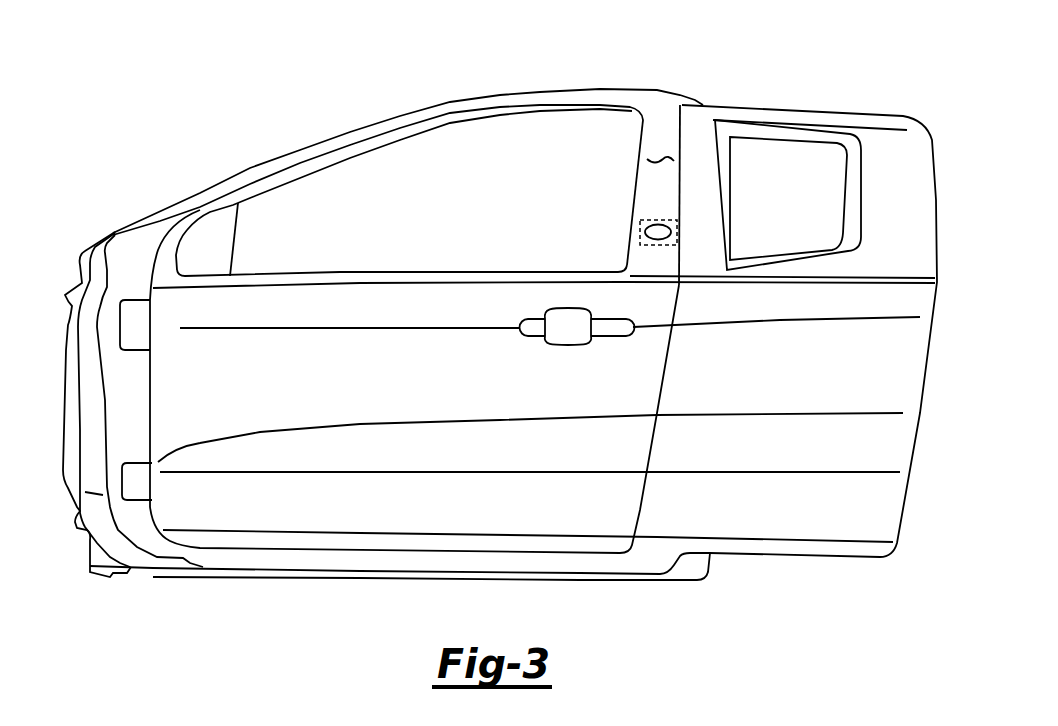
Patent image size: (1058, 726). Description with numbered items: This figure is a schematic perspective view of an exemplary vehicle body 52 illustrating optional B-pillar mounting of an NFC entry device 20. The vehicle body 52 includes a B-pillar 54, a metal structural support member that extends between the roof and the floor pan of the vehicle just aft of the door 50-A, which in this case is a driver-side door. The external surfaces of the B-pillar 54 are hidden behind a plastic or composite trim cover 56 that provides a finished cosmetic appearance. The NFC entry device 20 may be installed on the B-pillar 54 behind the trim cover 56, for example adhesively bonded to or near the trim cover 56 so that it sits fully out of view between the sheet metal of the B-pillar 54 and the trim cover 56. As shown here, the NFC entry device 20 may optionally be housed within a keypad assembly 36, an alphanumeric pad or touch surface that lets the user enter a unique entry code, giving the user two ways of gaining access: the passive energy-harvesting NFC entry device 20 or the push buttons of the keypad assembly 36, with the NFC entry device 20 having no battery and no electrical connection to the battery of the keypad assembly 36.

The vehicle body 52 is at (834, 76).
The B-pillar 54 is at (662, 135).
The trim cover 56 is at (660, 158).
The NFC entry device 20 is at (653, 226).
The keypad assembly 36 is at (652, 222).
The door 50-A is at (388, 378).